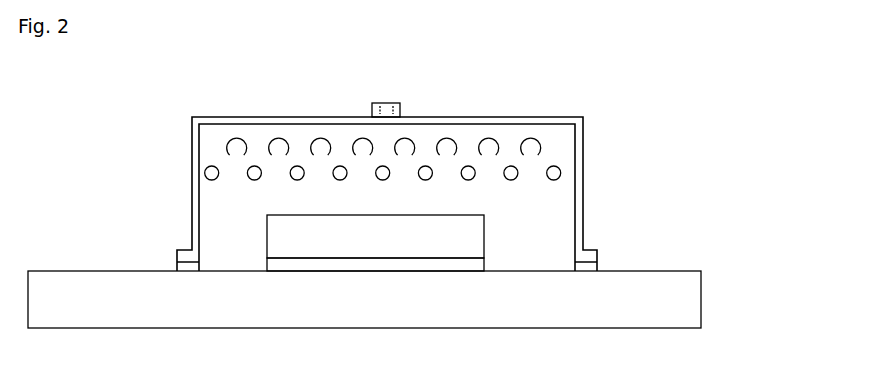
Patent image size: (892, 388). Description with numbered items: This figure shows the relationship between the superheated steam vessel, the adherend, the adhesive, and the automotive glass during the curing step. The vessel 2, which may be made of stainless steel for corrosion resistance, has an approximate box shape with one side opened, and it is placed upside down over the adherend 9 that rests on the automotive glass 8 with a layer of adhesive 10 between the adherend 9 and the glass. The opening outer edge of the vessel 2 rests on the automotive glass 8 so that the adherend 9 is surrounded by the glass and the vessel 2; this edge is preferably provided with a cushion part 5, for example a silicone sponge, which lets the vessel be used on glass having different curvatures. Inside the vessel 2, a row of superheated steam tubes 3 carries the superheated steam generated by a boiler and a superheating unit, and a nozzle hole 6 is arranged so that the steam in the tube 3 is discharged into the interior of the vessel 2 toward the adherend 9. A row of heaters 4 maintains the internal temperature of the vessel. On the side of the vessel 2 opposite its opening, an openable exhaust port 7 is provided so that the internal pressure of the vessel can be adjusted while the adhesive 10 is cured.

The vessel 2 is at (477, 116).
The superheated steam tube 3 is at (548, 138).
The heater 4 is at (563, 166).
The cushion part 5 is at (598, 264).
The nozzle hole 6 is at (233, 160).
The exhaust port 7 is at (386, 102).
The automotive glass 8 is at (681, 279).
The adherend 9 is at (266, 237).
The adhesive 10 is at (266, 263).